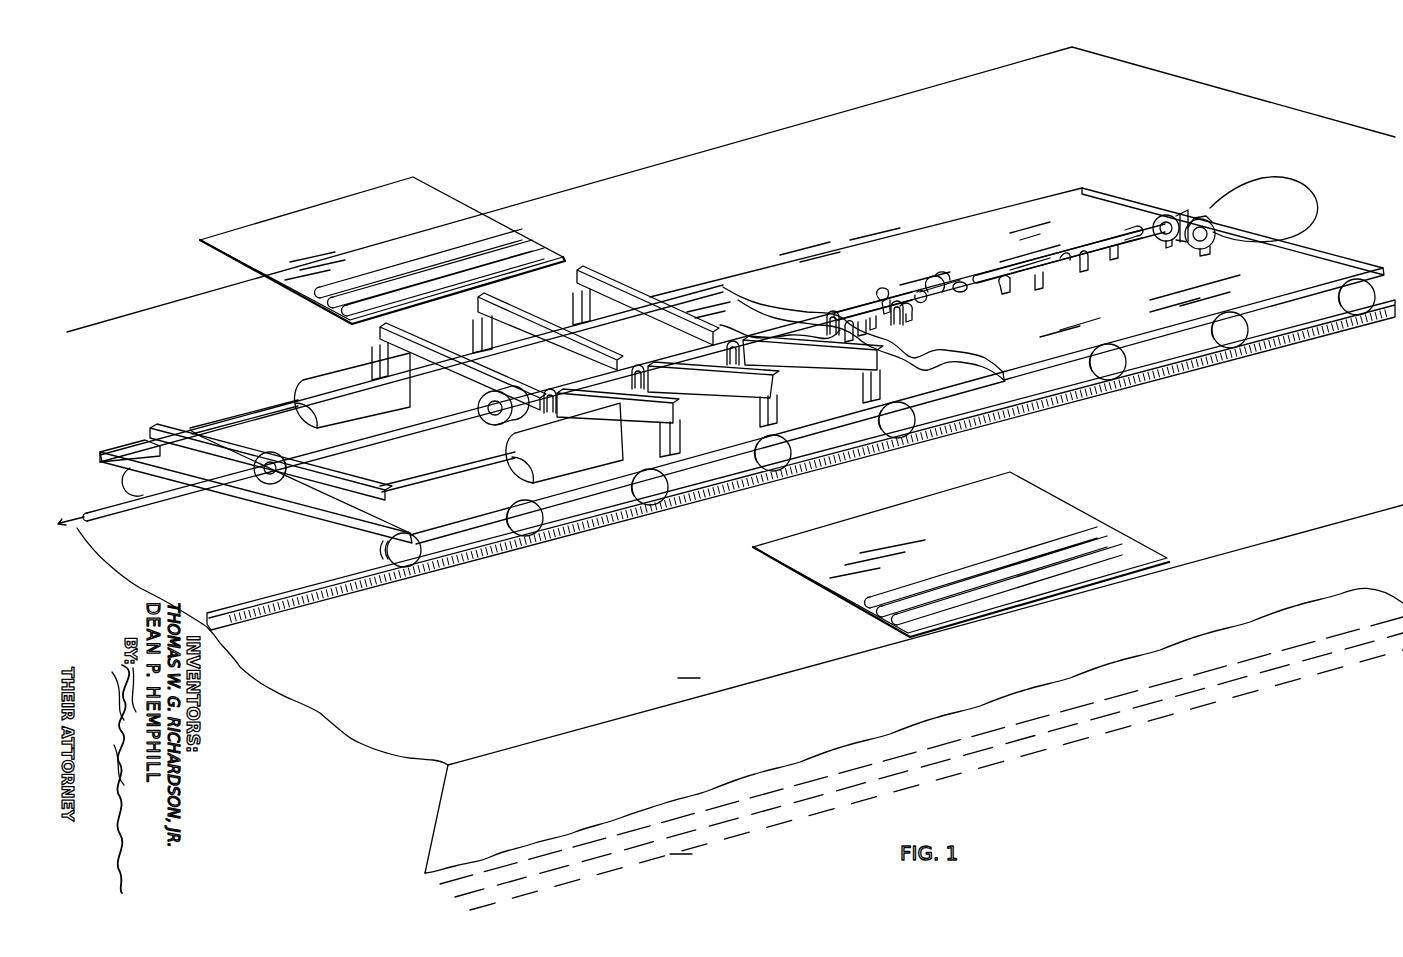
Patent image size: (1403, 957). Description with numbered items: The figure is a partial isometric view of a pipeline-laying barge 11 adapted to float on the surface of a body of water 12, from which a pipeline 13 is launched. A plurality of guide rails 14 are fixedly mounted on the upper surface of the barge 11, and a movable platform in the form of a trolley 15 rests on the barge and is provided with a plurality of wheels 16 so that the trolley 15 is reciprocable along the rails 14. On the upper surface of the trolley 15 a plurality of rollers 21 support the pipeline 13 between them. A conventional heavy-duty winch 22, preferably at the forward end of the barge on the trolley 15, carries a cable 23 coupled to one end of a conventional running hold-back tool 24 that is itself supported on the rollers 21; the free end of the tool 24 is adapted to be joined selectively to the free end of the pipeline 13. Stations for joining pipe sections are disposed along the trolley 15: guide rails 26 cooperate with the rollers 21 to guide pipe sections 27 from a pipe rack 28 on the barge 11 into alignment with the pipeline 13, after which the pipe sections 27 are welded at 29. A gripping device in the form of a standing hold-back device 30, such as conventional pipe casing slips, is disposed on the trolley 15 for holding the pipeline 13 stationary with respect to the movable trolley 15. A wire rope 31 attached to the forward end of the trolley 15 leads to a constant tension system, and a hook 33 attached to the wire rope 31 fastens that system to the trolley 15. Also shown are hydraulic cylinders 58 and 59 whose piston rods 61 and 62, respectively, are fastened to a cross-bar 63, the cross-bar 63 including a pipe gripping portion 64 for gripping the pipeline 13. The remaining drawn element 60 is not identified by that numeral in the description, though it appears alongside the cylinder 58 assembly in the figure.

The pipeline-laying barge 11 is at (735, 460).
The body of water 12 is at (914, 742).
The pipeline 13 is at (110, 506).
The rails 14 is at (698, 506).
The trolley 15 is at (690, 297).
The wheels 16 is at (386, 553).
The rollers 21 is at (866, 304).
The winch 22 is at (1176, 210).
The cable 23 is at (1155, 222).
The running hold-back tool 24 is at (1024, 262).
The guide rails 26 is at (606, 292).
The pipe sections 27 is at (1122, 546).
The pipe rack 28 is at (446, 180).
The weld location 29 is at (572, 378).
The standing hold-back device 30 is at (476, 402).
The wire rope 31 is at (1310, 182).
The hook 33 is at (1204, 218).
The hydraulic cylinder 58 is at (364, 368).
The hydraulic cylinder 59 is at (610, 434).
The hydraulic cylinder 60 is at (318, 384).
The piston rod 61 is at (280, 408).
The piston rod 62 is at (420, 480).
The cross-bar 63 is at (170, 428).
The pipe gripping portion 64 is at (312, 440).